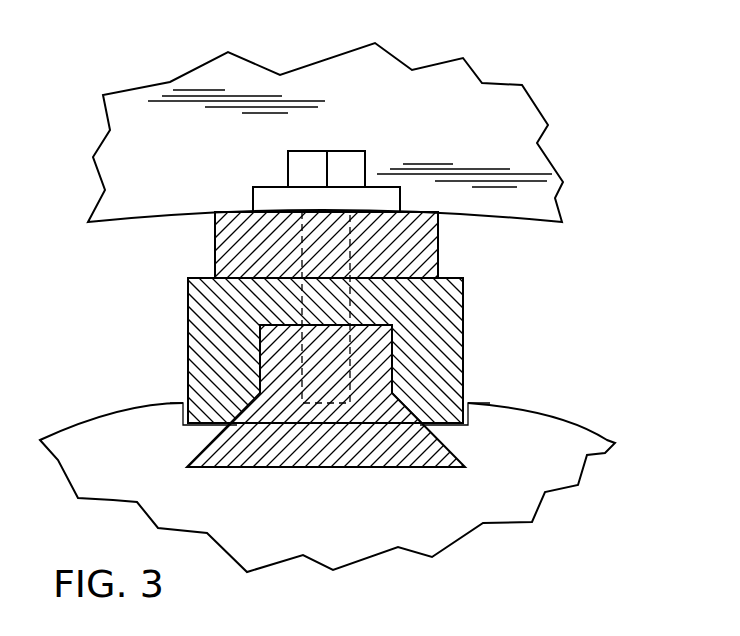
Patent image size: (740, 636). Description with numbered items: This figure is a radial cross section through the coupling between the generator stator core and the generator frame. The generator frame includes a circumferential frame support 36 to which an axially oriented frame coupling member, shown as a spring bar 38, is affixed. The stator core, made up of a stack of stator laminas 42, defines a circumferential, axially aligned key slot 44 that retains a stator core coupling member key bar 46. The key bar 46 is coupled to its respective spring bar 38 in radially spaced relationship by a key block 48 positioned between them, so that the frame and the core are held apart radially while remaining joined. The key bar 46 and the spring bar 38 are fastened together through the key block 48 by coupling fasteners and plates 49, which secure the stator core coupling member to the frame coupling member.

The circumferential frame support 36 is at (519, 100).
The spring bar 38 is at (413, 248).
The stator lamina 42 is at (490, 507).
The key slot 44 is at (332, 457).
The key bar 46 is at (377, 392).
The key block 48 is at (448, 329).
The coupling fasteners and plates 49 is at (385, 174).